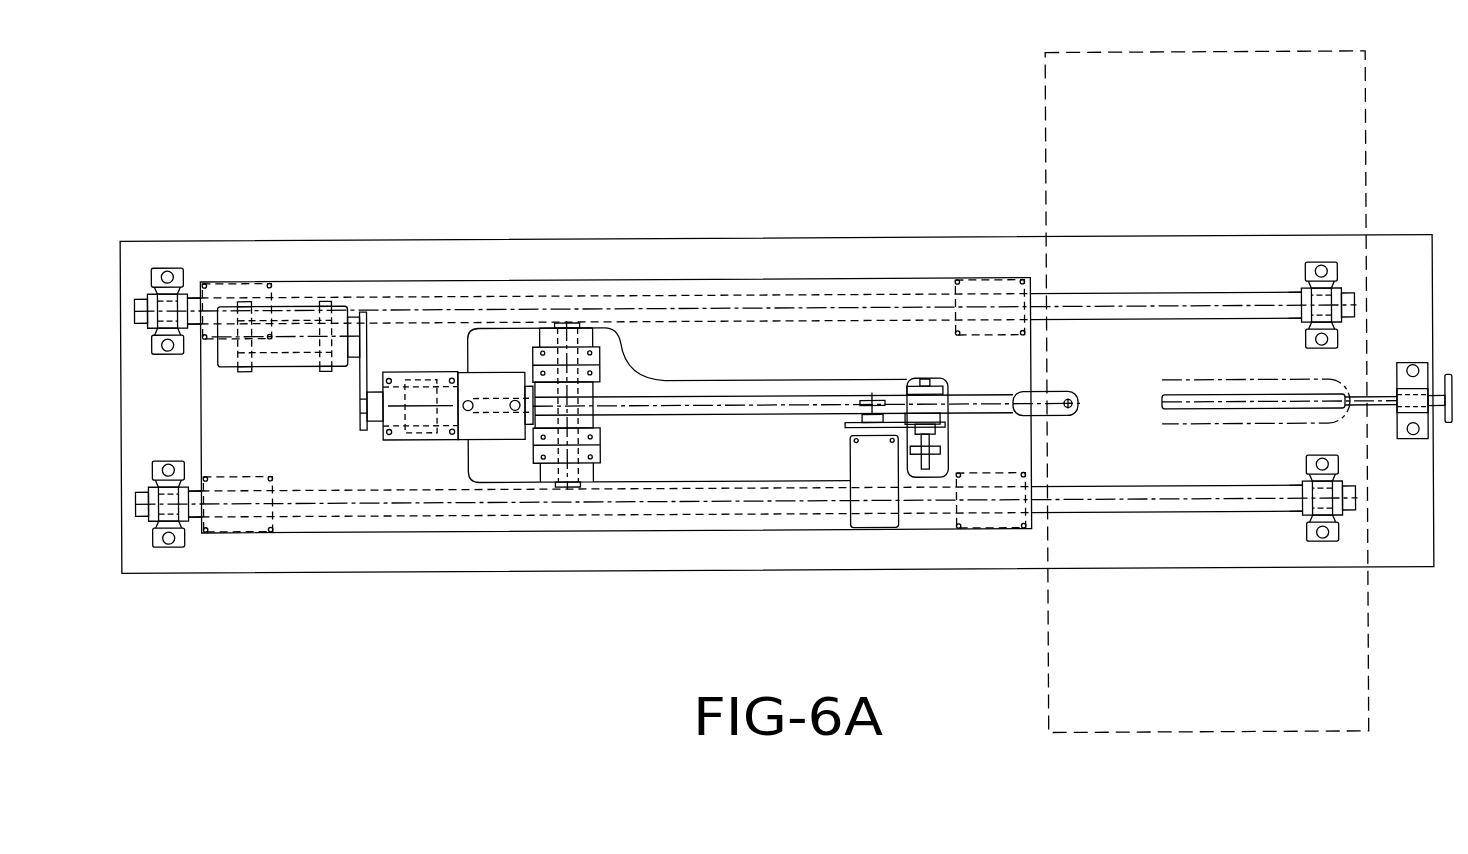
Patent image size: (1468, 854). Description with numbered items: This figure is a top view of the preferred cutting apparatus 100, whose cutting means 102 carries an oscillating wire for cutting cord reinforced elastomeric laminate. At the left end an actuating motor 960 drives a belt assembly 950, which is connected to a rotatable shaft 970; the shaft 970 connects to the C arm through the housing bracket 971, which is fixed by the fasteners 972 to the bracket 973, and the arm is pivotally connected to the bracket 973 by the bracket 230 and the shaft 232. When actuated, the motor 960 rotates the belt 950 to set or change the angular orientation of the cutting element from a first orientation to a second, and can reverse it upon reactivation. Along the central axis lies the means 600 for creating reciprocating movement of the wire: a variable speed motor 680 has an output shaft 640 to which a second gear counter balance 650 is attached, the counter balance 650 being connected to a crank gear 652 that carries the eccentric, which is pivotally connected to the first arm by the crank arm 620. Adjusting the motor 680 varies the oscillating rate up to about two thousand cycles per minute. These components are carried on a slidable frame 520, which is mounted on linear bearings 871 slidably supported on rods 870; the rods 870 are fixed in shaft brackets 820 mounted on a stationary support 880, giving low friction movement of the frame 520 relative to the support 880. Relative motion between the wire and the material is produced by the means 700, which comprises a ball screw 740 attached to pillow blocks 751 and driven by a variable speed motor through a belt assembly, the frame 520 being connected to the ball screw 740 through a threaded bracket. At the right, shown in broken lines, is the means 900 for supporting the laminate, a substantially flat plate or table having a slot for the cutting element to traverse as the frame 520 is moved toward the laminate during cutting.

The cutting apparatus 100 is at (777, 408).
The cutting means 102 is at (653, 436).
The bracket 230 is at (592, 457).
The shaft 232 is at (572, 324).
The slidable frame 520 is at (1010, 358).
The means for creating reciprocating movement 600 is at (825, 410).
The crank arm 620 is at (884, 393).
The output shaft 640 is at (877, 432).
The second gear counter balance 650 is at (945, 422).
The crank gear 652 is at (868, 424).
The variable speed motor 680 is at (880, 520).
The means for creating relative motion 700 is at (1307, 474).
The ball screw 740 is at (1238, 406).
The pillow blocks 751 is at (1413, 388).
The shaft brackets 820 is at (158, 270).
The rods 870 is at (1161, 300).
The linear bearings 871 is at (984, 520).
The stationary support 880 is at (412, 571).
The means for supporting the laminate 900 is at (1036, 176).
The belt assembly 950 is at (366, 313).
The actuating motor 960 is at (282, 352).
The rotatable shaft 970 is at (358, 406).
The housing bracket 971 is at (426, 383).
The fasteners 972 is at (515, 405).
The bracket 973 is at (499, 425).